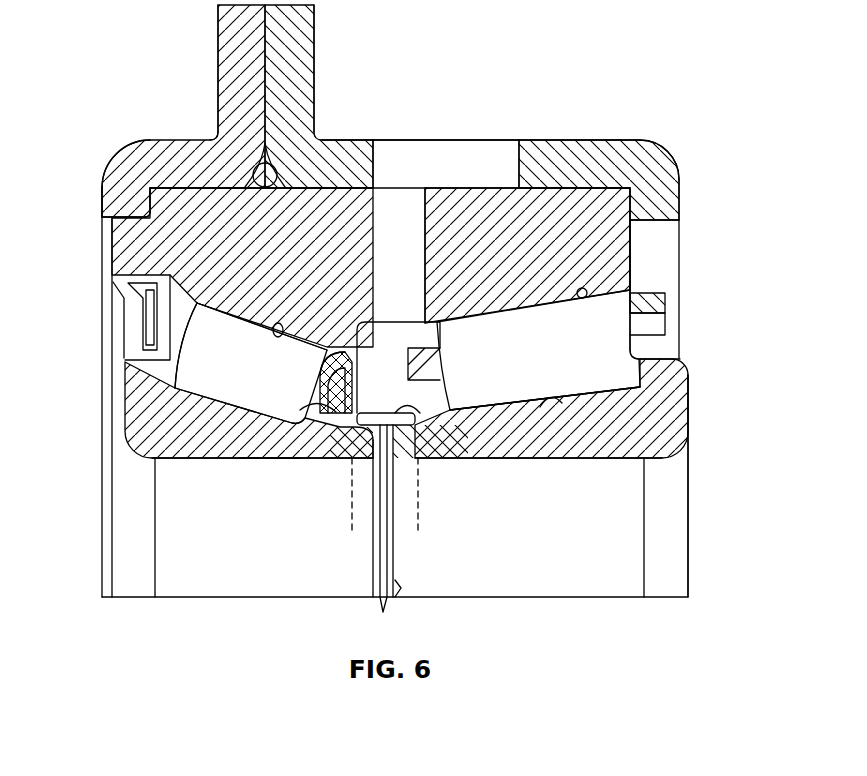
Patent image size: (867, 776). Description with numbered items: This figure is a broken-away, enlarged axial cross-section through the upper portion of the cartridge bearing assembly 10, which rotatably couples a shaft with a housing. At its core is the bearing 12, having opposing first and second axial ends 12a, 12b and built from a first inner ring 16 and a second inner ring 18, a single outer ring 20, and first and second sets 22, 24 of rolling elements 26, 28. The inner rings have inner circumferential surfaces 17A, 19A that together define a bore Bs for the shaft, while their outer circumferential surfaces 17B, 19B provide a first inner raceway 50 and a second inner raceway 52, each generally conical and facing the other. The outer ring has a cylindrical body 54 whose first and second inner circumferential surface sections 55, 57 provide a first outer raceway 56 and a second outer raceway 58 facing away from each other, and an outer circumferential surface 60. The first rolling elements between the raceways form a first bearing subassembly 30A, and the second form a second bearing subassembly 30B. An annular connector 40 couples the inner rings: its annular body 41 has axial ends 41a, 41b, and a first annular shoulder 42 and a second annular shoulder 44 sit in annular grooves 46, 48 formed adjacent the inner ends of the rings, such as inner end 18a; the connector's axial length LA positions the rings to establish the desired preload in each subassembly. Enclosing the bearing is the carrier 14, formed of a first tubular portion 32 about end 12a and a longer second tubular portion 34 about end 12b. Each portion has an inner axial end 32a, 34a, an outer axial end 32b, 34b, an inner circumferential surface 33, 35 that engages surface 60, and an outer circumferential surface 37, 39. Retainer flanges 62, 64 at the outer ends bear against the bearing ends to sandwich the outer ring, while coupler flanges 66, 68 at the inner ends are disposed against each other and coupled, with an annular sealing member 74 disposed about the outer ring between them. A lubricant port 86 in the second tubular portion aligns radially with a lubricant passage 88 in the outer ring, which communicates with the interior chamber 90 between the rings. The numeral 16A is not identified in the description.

The cartridge bearing assembly 10 is at (108, 39).
The bearing 12 is at (93, 290).
The first axial end 12a is at (135, 263).
The second axial end 12b is at (632, 222).
The carrier 14 is at (540, 86).
The first inner ring 16 is at (122, 410).
The needle 16A is at (385, 550).
The inner circumferential surface 17A is at (190, 462).
The outer circumferential surface 17B is at (262, 462).
The second inner ring 18 is at (696, 412).
The inner end 18a is at (378, 540).
The inner circumferential surface 19A is at (636, 460).
The outer circumferential surface 19B is at (550, 424).
The outer ring 20 is at (456, 183).
The first set of rolling elements 22 is at (319, 337).
The second set of rolling elements 24 is at (501, 306).
The rolling element 26 is at (175, 380).
The rolling element 28 is at (657, 305).
The first bearing subassembly 30A is at (206, 434).
The second bearing subassembly 30B is at (600, 434).
The first tubular portion 32 is at (114, 114).
The inner axial end 32a is at (222, 128).
The outer axial end 32b is at (120, 170).
The inner circumferential surface 33 is at (186, 194).
The second tubular portion 34 is at (636, 129).
The inner axial end 34a is at (318, 147).
The outer axial end 34b is at (668, 157).
The inner circumferential surface 35 is at (560, 150).
The outer circumferential surface 37 is at (178, 140).
The outer circumferential surface 39 is at (585, 146).
The annular connector 40 is at (391, 396).
The annular body 41 is at (347, 428).
The axial end 41a is at (327, 362).
The axial end 41b is at (422, 418).
The first annular shoulder 42 is at (326, 382).
The second annular shoulder 44 is at (468, 432).
The annular groove 46 is at (345, 460).
The annular groove 48 is at (428, 460).
The first inner raceway 50 is at (206, 384).
The second inner raceway 52 is at (601, 385).
The cylindrical body 54 is at (638, 271).
The first inner circumferential surface section 55 is at (260, 326).
The first outer raceway 56 is at (250, 338).
The second inner circumferential surface section 57 is at (582, 290).
The second outer raceway 58 is at (515, 310).
The outer circumferential surface 60 is at (570, 216).
The retainer flange 62 is at (106, 192).
The retainer flange 64 is at (659, 188).
The coupler flange 66 is at (215, 55).
The coupler flange 68 is at (318, 36).
The annular sealing member 74 is at (266, 185).
The lubricant port 86 is at (463, 158).
The lubricant passage 88 is at (405, 250).
The interior chamber 90 is at (415, 346).
The bore Bs is at (620, 558).
The axial length LA is at (421, 530).